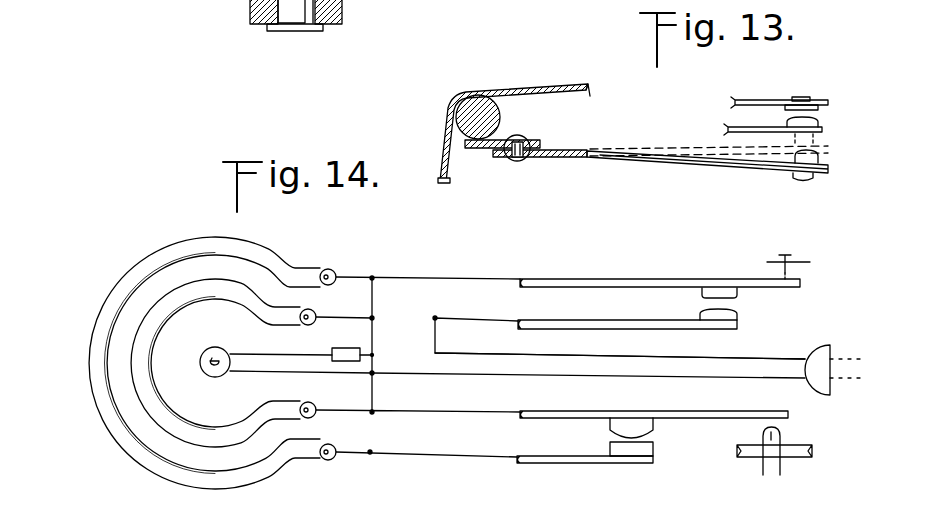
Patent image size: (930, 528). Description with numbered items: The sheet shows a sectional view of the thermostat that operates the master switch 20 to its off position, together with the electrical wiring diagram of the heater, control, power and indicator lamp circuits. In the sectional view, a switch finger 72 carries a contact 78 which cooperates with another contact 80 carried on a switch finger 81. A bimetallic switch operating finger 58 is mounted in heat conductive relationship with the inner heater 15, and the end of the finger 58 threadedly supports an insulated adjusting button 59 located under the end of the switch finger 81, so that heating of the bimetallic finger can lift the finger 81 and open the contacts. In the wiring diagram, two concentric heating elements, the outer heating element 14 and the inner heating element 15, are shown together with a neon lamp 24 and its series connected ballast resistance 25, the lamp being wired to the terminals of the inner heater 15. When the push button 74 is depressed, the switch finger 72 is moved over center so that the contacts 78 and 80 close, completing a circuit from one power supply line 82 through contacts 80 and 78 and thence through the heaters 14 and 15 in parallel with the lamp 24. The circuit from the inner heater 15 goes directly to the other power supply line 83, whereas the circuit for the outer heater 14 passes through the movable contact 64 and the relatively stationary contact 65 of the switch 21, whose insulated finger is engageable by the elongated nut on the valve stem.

In FIG. 14, the outer heating element 14 is at (94, 393).
In FIG. 13, the inner heating element 15 is at (490, 111).
In FIG. 14, the inner heating element 15 is at (157, 403).
In FIG. 14, the neon lamp 24 is at (203, 356).
In FIG. 14, the ballast resistance 25 is at (346, 348).
In FIG. 14, the master switch 20 is at (766, 314).
In FIG. 14, the switch 21 is at (674, 450).
In FIG. 13, the bimetallic switch operating finger 58 is at (590, 161).
In FIG. 13, the insulated adjusting button 59 is at (806, 181).
In FIG. 14, the movable contact 64 is at (628, 450).
In FIG. 14, the stationary contact 65 is at (628, 420).
In FIG. 13, the switch finger 72 is at (757, 98).
In FIG. 14, the push button 74 is at (798, 262).
In FIG. 13, the contact 78 is at (800, 97).
In FIG. 14, the contact 78 is at (700, 292).
In FIG. 13, the contact 80 is at (817, 122).
In FIG. 14, the contact 80 is at (738, 318).
In FIG. 13, the switch finger 81 is at (738, 125).
In FIG. 14, the power supply line 82 is at (660, 358).
In FIG. 14, the power supply line 83 is at (685, 380).